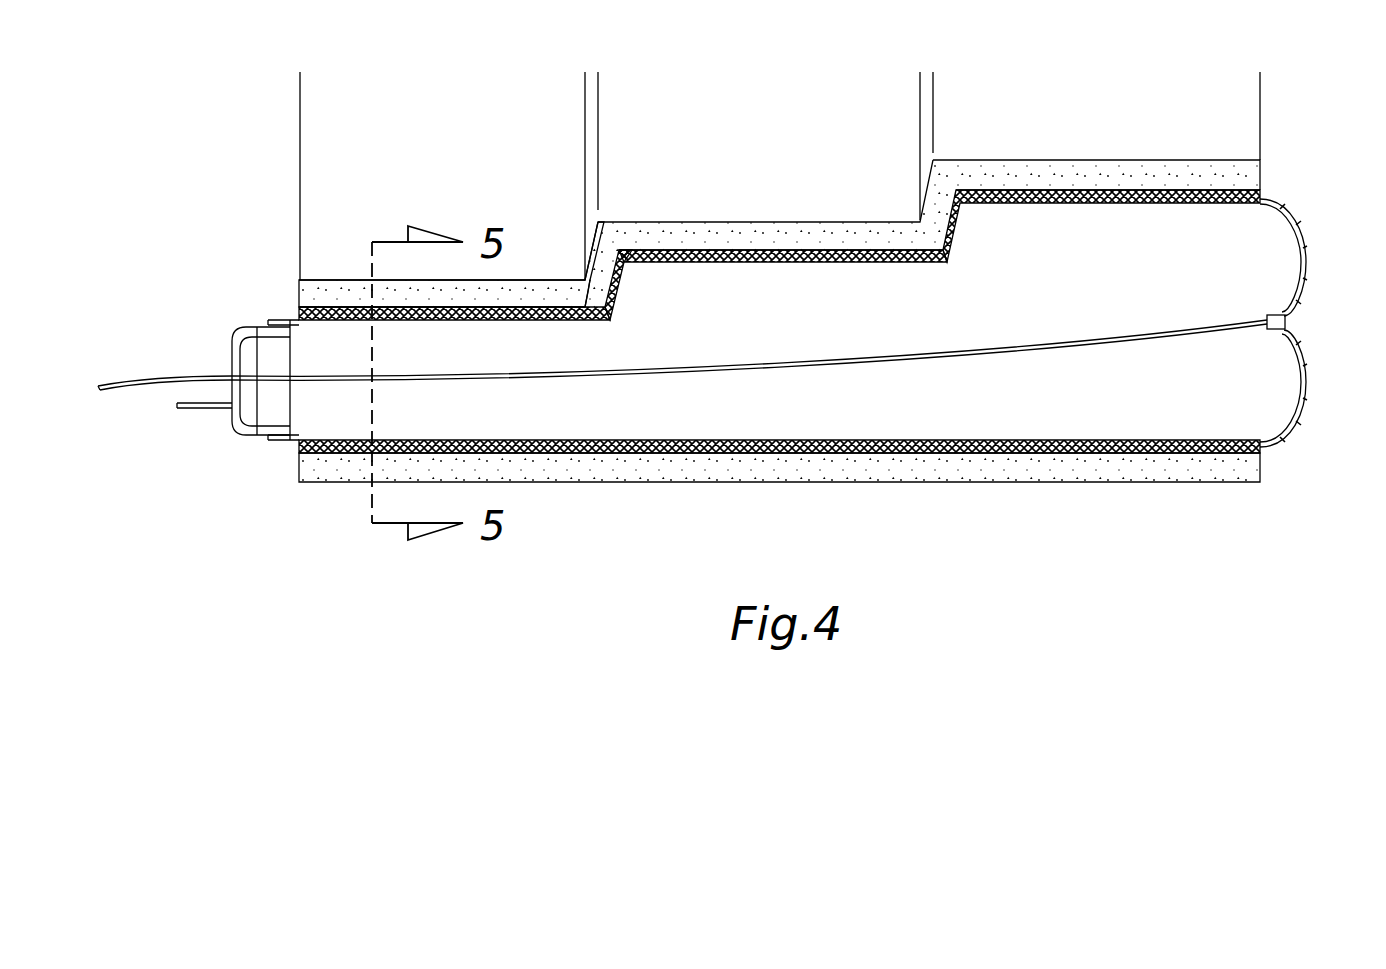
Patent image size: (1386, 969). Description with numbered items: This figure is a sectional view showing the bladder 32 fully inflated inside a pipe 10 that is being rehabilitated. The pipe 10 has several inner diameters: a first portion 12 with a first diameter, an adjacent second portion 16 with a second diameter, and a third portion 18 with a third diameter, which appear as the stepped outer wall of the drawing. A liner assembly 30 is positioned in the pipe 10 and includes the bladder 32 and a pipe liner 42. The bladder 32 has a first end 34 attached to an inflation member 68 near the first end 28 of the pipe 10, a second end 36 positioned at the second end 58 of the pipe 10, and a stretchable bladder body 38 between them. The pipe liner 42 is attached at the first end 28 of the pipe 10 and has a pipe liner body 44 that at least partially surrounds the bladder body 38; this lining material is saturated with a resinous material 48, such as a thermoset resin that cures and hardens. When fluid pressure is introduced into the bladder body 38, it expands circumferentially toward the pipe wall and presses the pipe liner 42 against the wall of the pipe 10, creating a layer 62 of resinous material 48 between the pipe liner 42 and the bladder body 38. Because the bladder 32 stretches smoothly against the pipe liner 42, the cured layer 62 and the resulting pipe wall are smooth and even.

The pipe 10 is at (495, 177).
The first portion 12 is at (585, 84).
The second portion 16 is at (598, 84).
The third portion 18 is at (933, 84).
The first end of the pipe 28 is at (299, 293).
The liner assembly 30 is at (837, 303).
The bladder 32 is at (948, 440).
The first end of the bladder 34 is at (291, 428).
The second end of the bladder 36 is at (1304, 251).
The bladder body 38 is at (787, 263).
The pipe liner 42 is at (1261, 194).
The pipe liner body 44 is at (700, 254).
The resinous material 48 is at (578, 314).
The second end of the pipe 58 is at (1261, 169).
The layer of resinous material 62 is at (477, 314).
The inflation member 68 is at (232, 346).